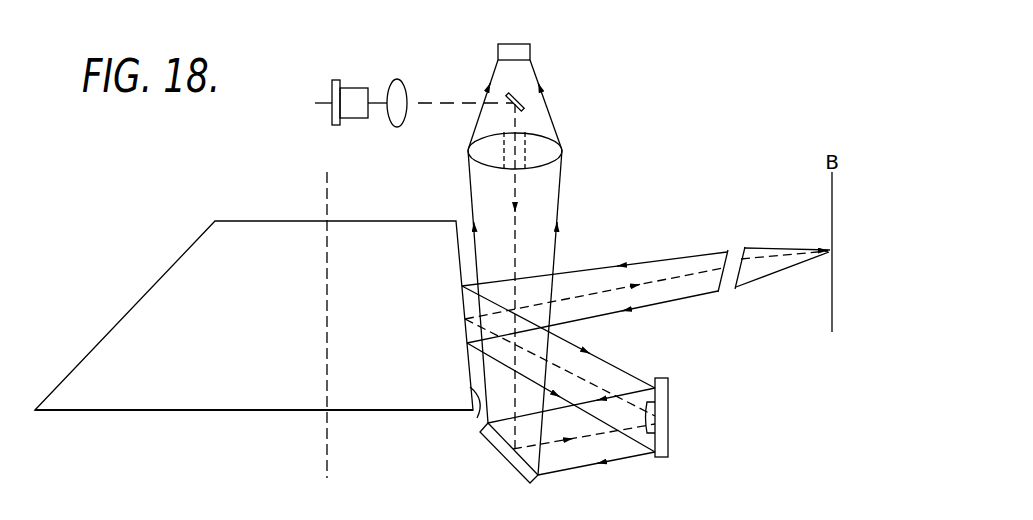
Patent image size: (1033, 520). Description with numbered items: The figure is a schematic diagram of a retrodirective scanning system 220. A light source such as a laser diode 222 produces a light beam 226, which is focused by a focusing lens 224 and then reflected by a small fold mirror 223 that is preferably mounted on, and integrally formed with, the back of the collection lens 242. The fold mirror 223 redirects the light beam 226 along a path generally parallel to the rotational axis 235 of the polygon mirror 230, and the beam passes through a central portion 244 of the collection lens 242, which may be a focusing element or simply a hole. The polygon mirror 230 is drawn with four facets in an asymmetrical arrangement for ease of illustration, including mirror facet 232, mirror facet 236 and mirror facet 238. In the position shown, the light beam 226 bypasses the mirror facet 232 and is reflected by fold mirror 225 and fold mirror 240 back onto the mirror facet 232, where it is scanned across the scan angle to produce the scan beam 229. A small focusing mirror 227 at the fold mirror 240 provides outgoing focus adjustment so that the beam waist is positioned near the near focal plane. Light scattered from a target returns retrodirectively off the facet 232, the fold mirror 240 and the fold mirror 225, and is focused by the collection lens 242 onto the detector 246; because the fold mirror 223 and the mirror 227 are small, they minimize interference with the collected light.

The scanning system 220 is at (679, 75).
The laser diode 222 is at (336, 80).
The focusing lens 224 is at (397, 78).
The light beam 226 is at (435, 100).
The fold mirror 223 is at (527, 103).
The detector 246 is at (533, 44).
The collection lens 242 is at (563, 152).
The central portion 244 is at (505, 154).
The scan beam 229 is at (667, 278).
The mirror facet 236 is at (92, 348).
The polygon mirror 230 is at (160, 414).
The mirror facet 238 is at (248, 405).
The rotational axis 235 is at (330, 449).
The mirror facet 232 is at (477, 418).
The fold mirror 225 is at (502, 460).
The fold mirror 240 is at (678, 373).
The focusing mirror 227 is at (648, 434).